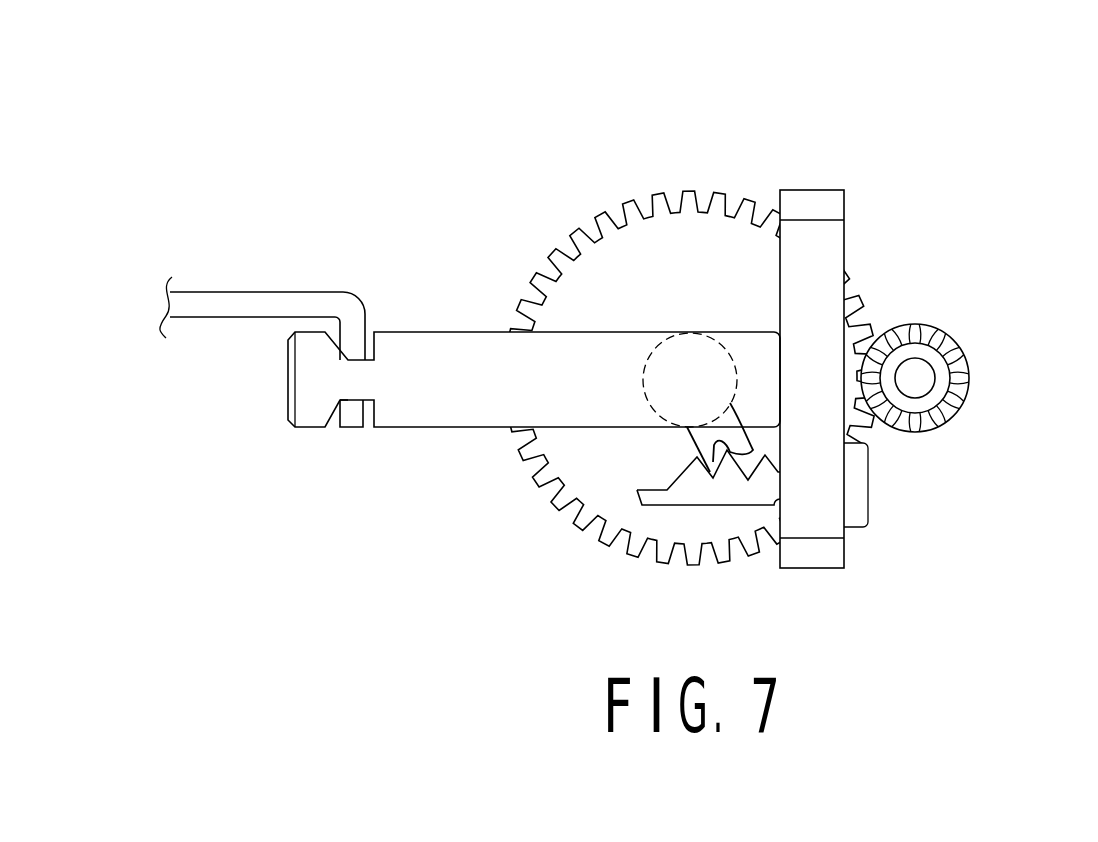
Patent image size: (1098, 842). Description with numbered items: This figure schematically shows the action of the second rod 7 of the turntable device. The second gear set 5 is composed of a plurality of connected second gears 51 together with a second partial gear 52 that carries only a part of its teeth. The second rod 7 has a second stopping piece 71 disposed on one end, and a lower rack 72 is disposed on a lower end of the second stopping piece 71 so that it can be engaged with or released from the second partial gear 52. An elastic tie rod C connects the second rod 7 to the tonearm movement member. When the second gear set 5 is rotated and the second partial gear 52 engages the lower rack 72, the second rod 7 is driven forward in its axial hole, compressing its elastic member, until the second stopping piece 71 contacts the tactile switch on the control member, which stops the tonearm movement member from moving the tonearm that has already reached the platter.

The elastic tie rod C is at (208, 298).
The second gear set 5 is at (726, 313).
The second gear 51 is at (677, 233).
The second partial gear 52 is at (707, 443).
The second rod 7 is at (438, 342).
The second stopping piece 71 is at (820, 522).
The lower rack 72 is at (718, 487).